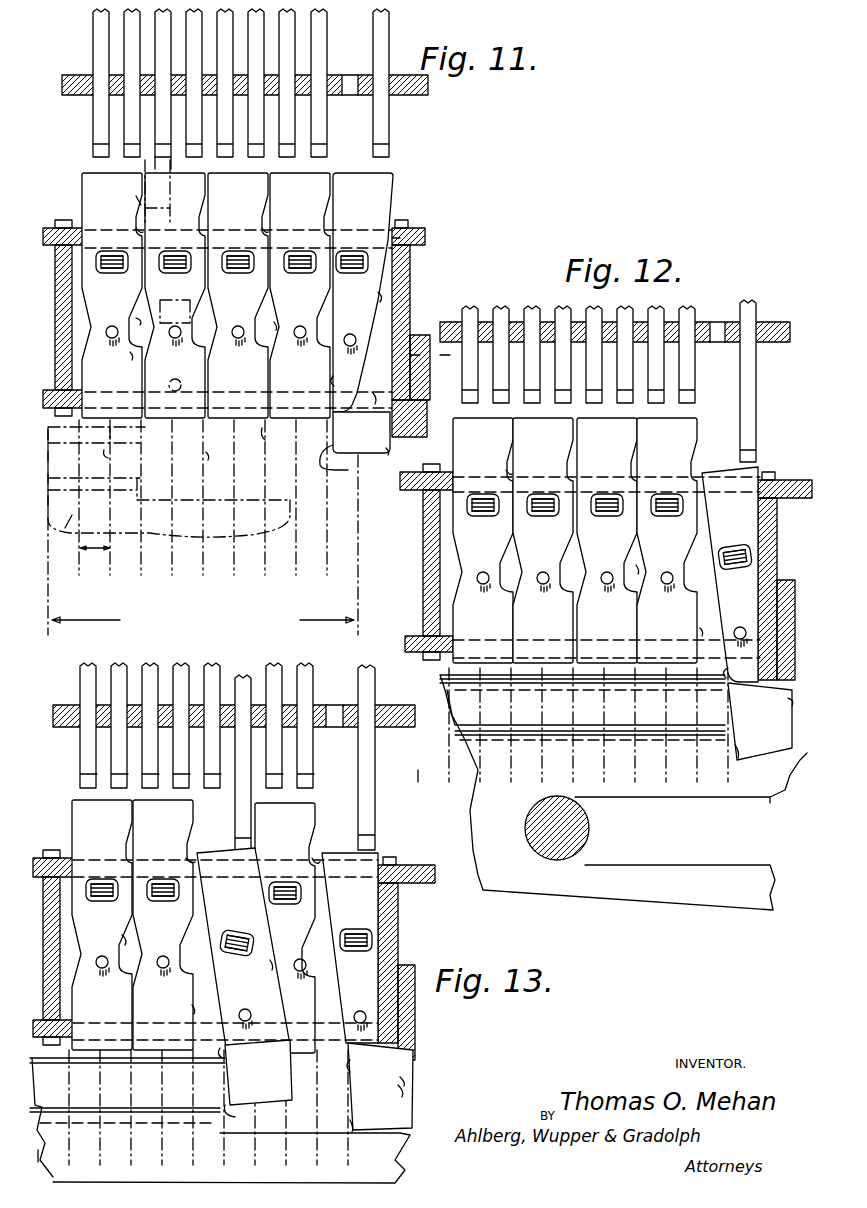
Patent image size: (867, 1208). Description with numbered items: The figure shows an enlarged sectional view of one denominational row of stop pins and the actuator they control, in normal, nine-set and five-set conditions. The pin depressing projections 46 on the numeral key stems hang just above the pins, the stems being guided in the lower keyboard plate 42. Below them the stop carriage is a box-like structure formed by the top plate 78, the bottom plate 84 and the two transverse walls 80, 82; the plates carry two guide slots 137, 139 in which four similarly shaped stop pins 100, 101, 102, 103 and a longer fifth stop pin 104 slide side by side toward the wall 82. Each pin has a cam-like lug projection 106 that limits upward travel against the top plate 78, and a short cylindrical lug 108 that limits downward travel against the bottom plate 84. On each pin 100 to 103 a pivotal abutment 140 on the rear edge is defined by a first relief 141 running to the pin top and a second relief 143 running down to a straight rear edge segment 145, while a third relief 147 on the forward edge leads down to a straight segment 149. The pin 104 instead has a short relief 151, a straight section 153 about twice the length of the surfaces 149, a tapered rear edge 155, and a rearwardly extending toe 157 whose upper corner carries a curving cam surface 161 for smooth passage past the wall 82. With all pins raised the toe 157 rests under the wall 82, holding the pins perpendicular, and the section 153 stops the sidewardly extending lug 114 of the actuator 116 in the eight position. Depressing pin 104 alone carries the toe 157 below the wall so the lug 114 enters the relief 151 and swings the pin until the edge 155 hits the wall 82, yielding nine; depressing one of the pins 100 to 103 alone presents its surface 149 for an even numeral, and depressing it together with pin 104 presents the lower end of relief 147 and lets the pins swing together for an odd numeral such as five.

In FIG. 11, the lower keyboard plate 42 is at (393, 100).
In FIG. 12, the lower keyboard plate 42 is at (778, 330).
In FIG. 13, the lower keyboard plate 42 is at (388, 729).
In FIG. 11, the pin depressing projection 46 is at (93, 130).
In FIG. 12, the pin depressing projection 46 is at (470, 385).
In FIG. 13, the pin depressing projection 46 is at (245, 687).
In FIG. 11, the top plate 78 is at (415, 238).
In FIG. 12, the top plate 78 is at (792, 484).
In FIG. 13, the top plate 78 is at (415, 870).
In FIG. 11, the transverse wall 80 is at (76, 352).
In FIG. 12, the transverse wall 80 is at (423, 593).
In FIG. 13, the transverse wall 80 is at (60, 982).
In FIG. 11, the transverse wall 82 is at (410, 305).
In FIG. 12, the transverse wall 82 is at (780, 558).
In FIG. 13, the transverse wall 82 is at (400, 924).
In FIG. 11, the bottom plate 84 is at (67, 318).
In FIG. 12, the bottom plate 84 is at (425, 646).
In FIG. 13, the bottom plate 84 is at (53, 947).
In FIG. 11, the stop pin 100 is at (96, 179).
In FIG. 12, the stop pin 100 is at (496, 634).
In FIG. 13, the stop pin 100 is at (116, 1019).
In FIG. 11, the stop pin 101 is at (190, 186).
In FIG. 12, the stop pin 101 is at (556, 634).
In FIG. 13, the stop pin 101 is at (177, 1019).
In FIG. 11, the stop pin 102 is at (235, 181).
In FIG. 12, the stop pin 102 is at (620, 634).
In FIG. 13, the stop pin 102 is at (222, 917).
In FIG. 11, the stop pin 103 is at (300, 186).
In FIG. 12, the stop pin 103 is at (680, 634).
In FIG. 13, the stop pin 103 is at (312, 1021).
In FIG. 11, the stop pin 104 is at (370, 189).
In FIG. 12, the stop pin 104 is at (755, 471).
In FIG. 13, the stop pin 104 is at (394, 1113).
In FIG. 11, the cam-like lug projection 106 is at (102, 270).
In FIG. 11, the short cylindrical lug 108 is at (107, 328).
In FIG. 11, the sidewardly extending lug 114 is at (202, 527).
In FIG. 12, the sidewardly extending lug 114 is at (732, 713).
In FIG. 13, the sidewardly extending lug 114 is at (189, 1094).
In FIG. 11, the actuator 116 is at (70, 525).
In FIG. 12, the actuator 116 is at (545, 890).
In FIG. 13, the actuator 116 is at (392, 1162).
In FIG. 11, the guide slot 137 is at (395, 240).
In FIG. 11, the guide slot 139 is at (437, 350).
In FIG. 12, the guide slot 139 is at (451, 355).
In FIG. 11, the pivotal abutment 140 is at (140, 229).
In FIG. 12, the pivotal abutment 140 is at (518, 469).
In FIG. 13, the pivotal abutment 140 is at (190, 862).
In FIG. 11, the first relief 141 is at (140, 201).
In FIG. 11, the second relief 143 is at (138, 317).
In FIG. 13, the second relief 143 is at (125, 937).
In FIG. 11, the straight rear edge segment 145 is at (134, 354).
In FIG. 12, the straight rear edge segment 145 is at (721, 631).
In FIG. 13, the straight rear edge segment 145 is at (207, 1012).
In FIG. 11, the third relief 147 is at (278, 326).
In FIG. 12, the third relief 147 is at (640, 570).
In FIG. 13, the third relief 147 is at (270, 962).
In FIG. 11, the straight segment 149 is at (266, 444).
In FIG. 13, the straight segment 149 is at (235, 1117).
In FIG. 11, the relief 151 is at (349, 377).
In FIG. 12, the relief 151 is at (730, 680).
In FIG. 13, the relief 151 is at (352, 1067).
In FIG. 11, the straight section 153 is at (350, 471).
In FIG. 12, the straight section 153 is at (740, 750).
In FIG. 13, the straight section 153 is at (352, 1127).
In FIG. 11, the rear edge 155 is at (378, 294).
In FIG. 11, the toe 157 is at (374, 394).
In FIG. 12, the toe 157 is at (790, 702).
In FIG. 13, the toe 157 is at (400, 1092).
In FIG. 11, the cam surface 161 is at (389, 449).
In FIG. 13, the cam surface 161 is at (405, 1082).